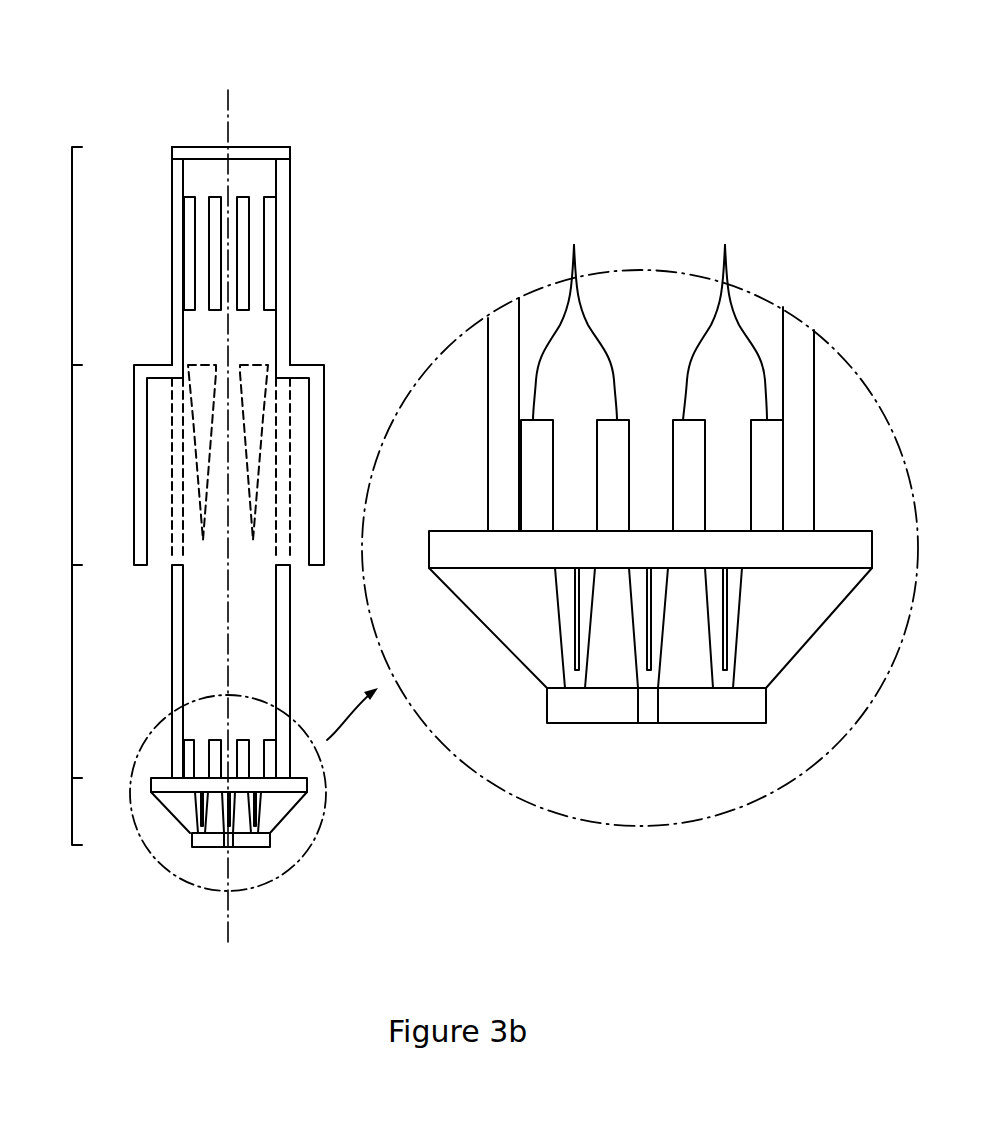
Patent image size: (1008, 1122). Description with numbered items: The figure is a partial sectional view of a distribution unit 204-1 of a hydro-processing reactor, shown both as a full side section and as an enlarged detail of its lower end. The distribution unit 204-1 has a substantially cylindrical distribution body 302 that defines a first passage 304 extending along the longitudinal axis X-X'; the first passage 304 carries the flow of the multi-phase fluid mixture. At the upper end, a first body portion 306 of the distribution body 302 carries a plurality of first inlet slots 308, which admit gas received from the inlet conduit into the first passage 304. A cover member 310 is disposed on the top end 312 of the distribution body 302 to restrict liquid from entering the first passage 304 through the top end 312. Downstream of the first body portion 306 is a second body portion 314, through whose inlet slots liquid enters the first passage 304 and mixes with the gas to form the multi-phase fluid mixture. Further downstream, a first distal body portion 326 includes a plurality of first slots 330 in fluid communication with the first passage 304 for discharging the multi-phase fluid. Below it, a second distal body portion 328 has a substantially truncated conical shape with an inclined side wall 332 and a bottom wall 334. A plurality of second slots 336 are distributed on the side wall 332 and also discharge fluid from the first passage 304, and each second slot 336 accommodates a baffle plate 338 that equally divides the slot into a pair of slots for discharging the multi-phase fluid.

The distribution unit 204-1 is at (186, 62).
The distribution body 302 is at (293, 162).
The first passage 304 is at (241, 187).
The first body portion 306 is at (72, 257).
The first inlet slots 308 is at (213, 227).
The cover member 310 is at (274, 152).
The top end 312 is at (182, 130).
The second body portion 314 is at (72, 467).
The first distal body portion 326 is at (72, 673).
The second distal body portion 328 is at (72, 813).
The first slots 330 is at (594, 234).
The side wall 332 is at (818, 624).
The bottom wall 334 is at (547, 723).
The second slots 336 is at (562, 634).
The baffle plate 338 is at (575, 655).